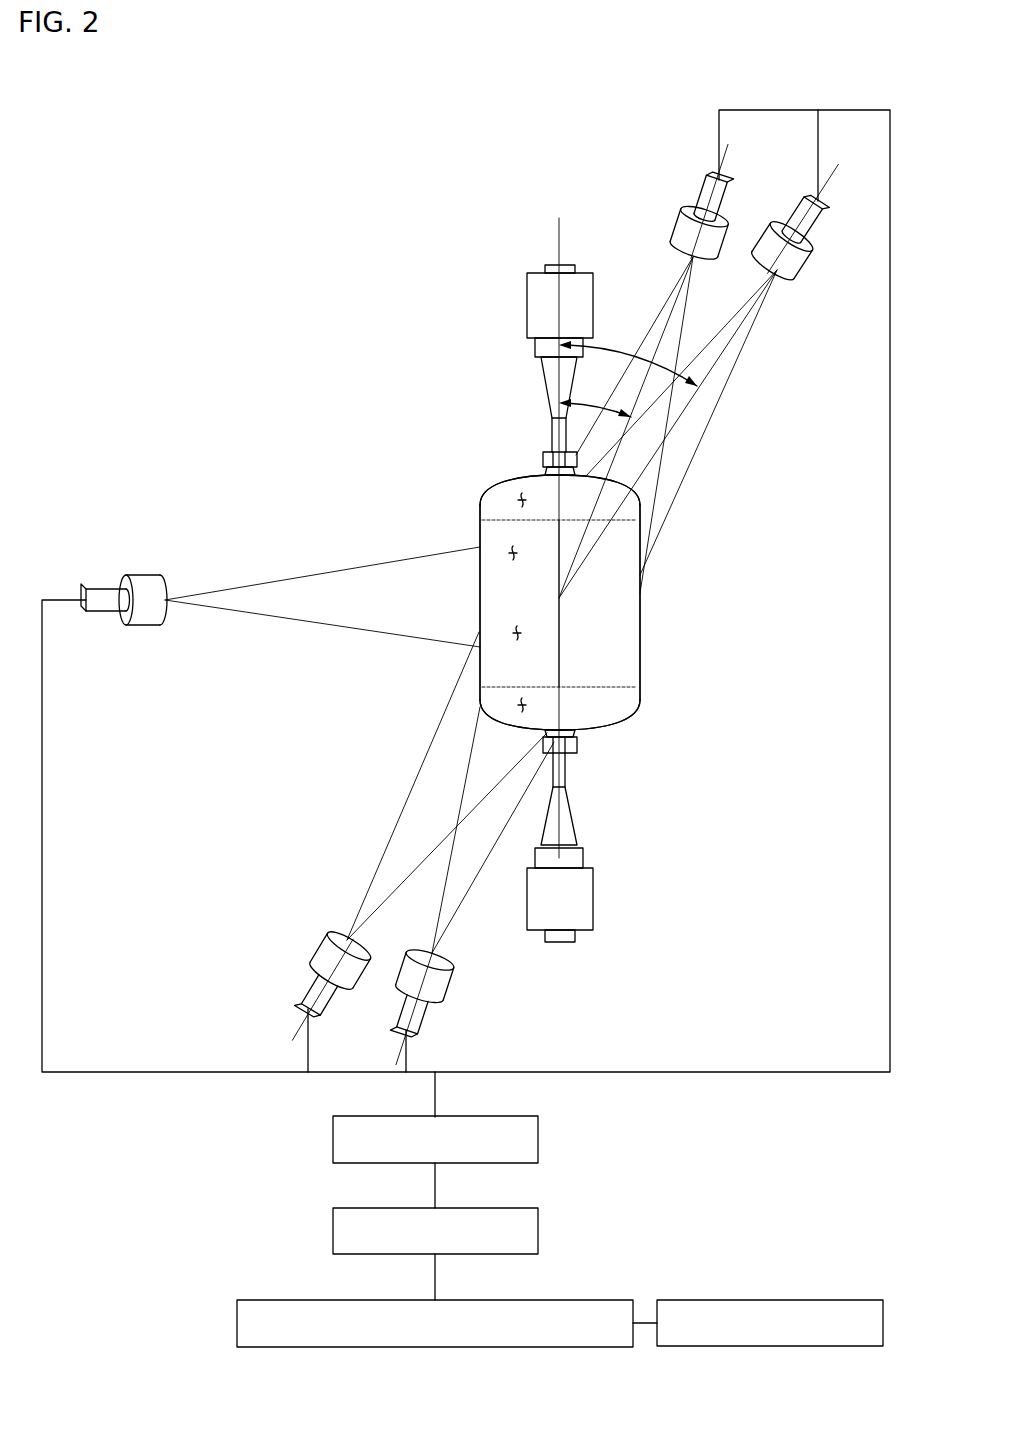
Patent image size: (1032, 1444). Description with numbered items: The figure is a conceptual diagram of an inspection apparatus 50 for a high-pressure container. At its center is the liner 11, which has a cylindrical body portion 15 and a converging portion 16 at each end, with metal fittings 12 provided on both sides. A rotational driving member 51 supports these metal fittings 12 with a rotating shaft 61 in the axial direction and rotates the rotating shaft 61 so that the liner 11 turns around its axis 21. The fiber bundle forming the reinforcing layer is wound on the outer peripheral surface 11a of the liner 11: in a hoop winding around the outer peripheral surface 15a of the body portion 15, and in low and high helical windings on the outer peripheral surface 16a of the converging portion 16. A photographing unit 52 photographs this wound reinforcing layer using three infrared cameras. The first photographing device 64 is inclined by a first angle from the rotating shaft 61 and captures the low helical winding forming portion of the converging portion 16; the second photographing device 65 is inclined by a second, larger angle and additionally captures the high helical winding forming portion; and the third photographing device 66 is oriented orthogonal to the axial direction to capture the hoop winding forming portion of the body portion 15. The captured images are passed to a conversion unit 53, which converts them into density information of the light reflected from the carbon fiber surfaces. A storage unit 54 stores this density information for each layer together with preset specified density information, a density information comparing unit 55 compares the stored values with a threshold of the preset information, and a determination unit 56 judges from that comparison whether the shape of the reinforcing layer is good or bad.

The liner 11 is at (644, 633).
The outer peripheral surface 11a is at (517, 633).
The metal fittings 12 is at (543, 460).
The body portion 15 is at (632, 597).
The outer peripheral surface 15a is at (512, 553).
The converging portion 16 is at (633, 507).
The outer peripheral surface 16a is at (520, 502).
The axis 21 is at (561, 658).
The inspection apparatus 50 is at (387, 203).
The rotational driving member 51 is at (540, 233).
The photographing unit 52 is at (765, 160).
The conversion unit 53 is at (540, 1140).
The storage unit 54 is at (540, 1232).
The density information comparing unit 55 is at (530, 1301).
The determination unit 56 is at (883, 1323).
The rotating shaft 61 is at (530, 305).
The first photographing device 64 is at (707, 195).
The second photographing device 65 is at (822, 232).
The third photographing device 66 is at (104, 584).